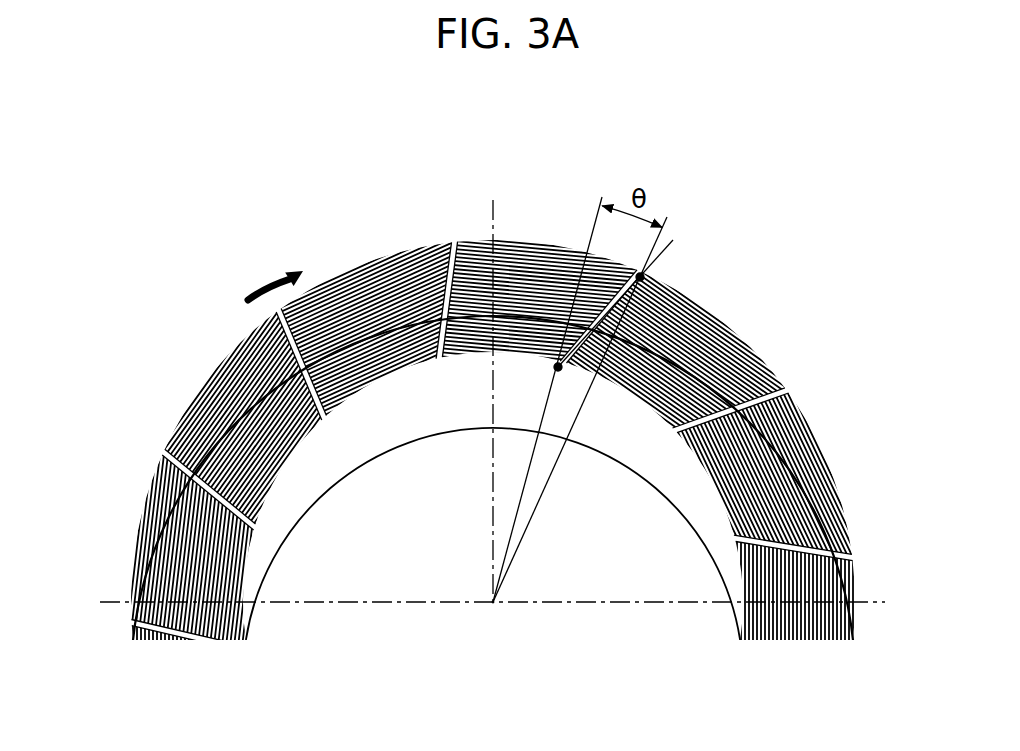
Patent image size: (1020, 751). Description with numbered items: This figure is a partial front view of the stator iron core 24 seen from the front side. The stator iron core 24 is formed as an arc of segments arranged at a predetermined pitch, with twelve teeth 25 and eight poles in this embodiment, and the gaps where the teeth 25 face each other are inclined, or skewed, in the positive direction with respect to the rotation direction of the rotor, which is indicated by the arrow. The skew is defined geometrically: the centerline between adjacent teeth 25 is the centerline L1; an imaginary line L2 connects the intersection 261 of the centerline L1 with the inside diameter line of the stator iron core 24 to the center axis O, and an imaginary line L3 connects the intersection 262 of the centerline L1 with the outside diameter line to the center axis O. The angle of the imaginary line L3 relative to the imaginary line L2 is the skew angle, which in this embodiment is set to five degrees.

The stator iron core 24 is at (202, 367).
The teeth 25 is at (468, 348).
The intersection 261 is at (557, 369).
The intersection 262 is at (643, 275).
The centerline L1 is at (673, 243).
The imaginary line L2 is at (592, 212).
The imaginary line L3 is at (668, 224).
The center axis O is at (481, 620).